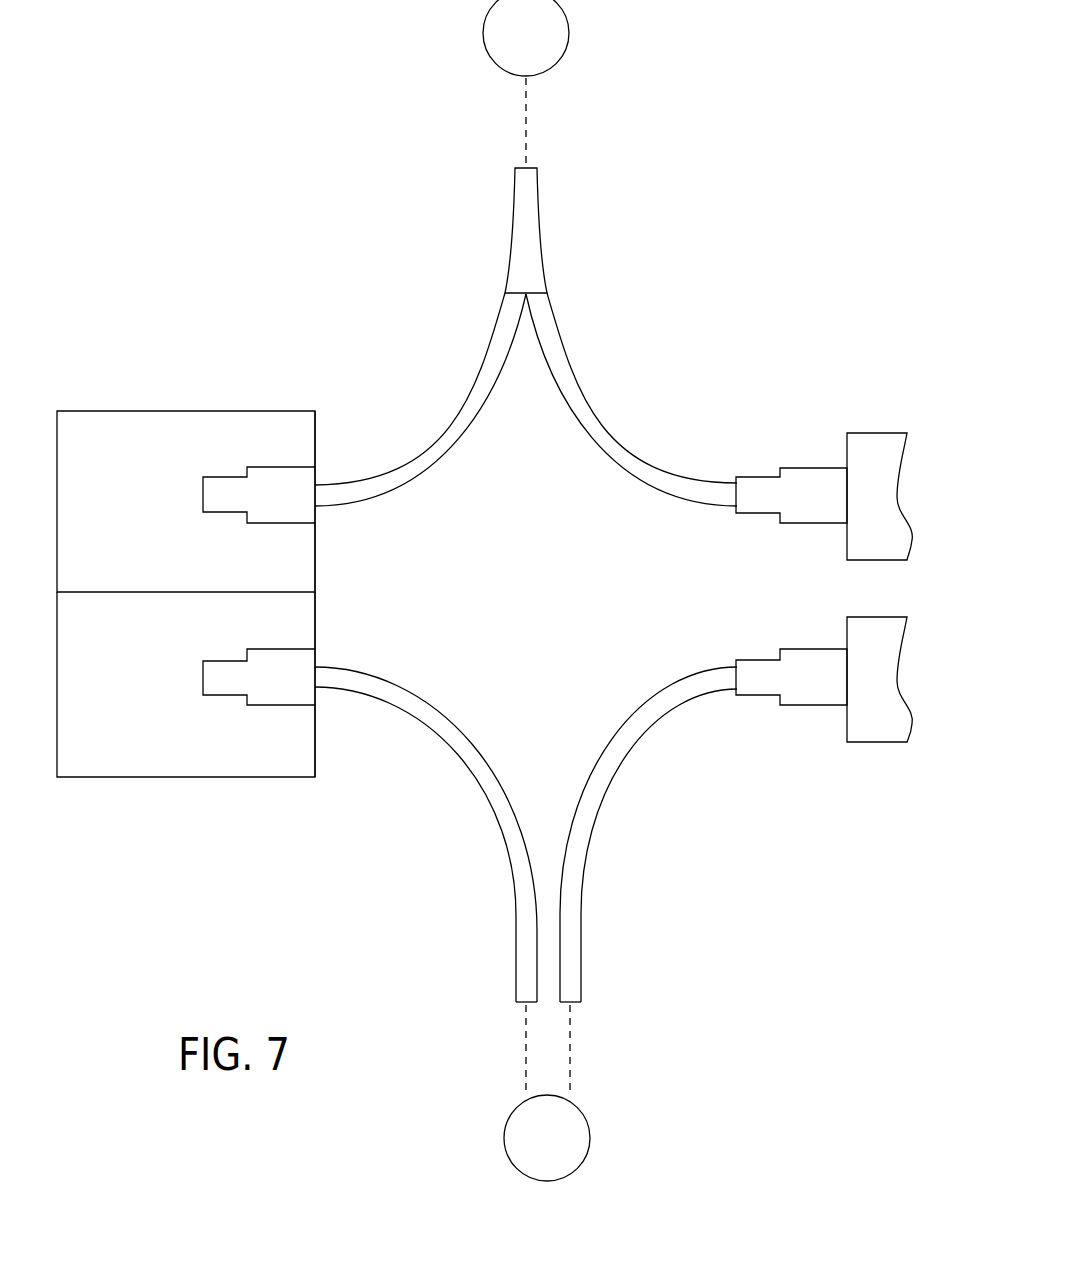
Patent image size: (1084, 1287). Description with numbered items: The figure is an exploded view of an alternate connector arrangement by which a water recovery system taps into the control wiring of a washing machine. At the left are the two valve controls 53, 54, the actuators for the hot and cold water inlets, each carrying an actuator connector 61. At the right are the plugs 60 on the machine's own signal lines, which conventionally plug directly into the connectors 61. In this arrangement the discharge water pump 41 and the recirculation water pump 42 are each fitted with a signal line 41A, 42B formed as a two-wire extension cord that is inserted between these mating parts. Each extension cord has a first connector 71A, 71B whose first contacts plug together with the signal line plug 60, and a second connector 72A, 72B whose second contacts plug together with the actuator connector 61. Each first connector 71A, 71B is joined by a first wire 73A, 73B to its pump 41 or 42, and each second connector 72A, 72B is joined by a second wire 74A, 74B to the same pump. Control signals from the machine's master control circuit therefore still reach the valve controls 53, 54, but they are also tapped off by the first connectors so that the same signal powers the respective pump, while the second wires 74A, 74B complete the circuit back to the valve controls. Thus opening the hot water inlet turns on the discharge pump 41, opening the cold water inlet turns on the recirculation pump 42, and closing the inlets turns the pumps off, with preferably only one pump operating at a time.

The discharge water pump 41 is at (526, 83).
The signal line 41A is at (513, 208).
The recirculation water pump 42 is at (547, 1093).
The second supply tube ends 42B is at (582, 947).
The valve control 53 is at (145, 425).
The valve control 54 is at (166, 762).
The plug 60 is at (877, 450).
The connector 61 is at (317, 440).
The first connector 71A is at (800, 473).
The first connector 71B is at (760, 683).
The second connector 72A is at (270, 482).
The second connector 72B is at (275, 690).
The first wire 73A is at (572, 378).
The first wire 73B is at (590, 835).
The second wire 74A is at (490, 347).
The second wire 74B is at (513, 887).